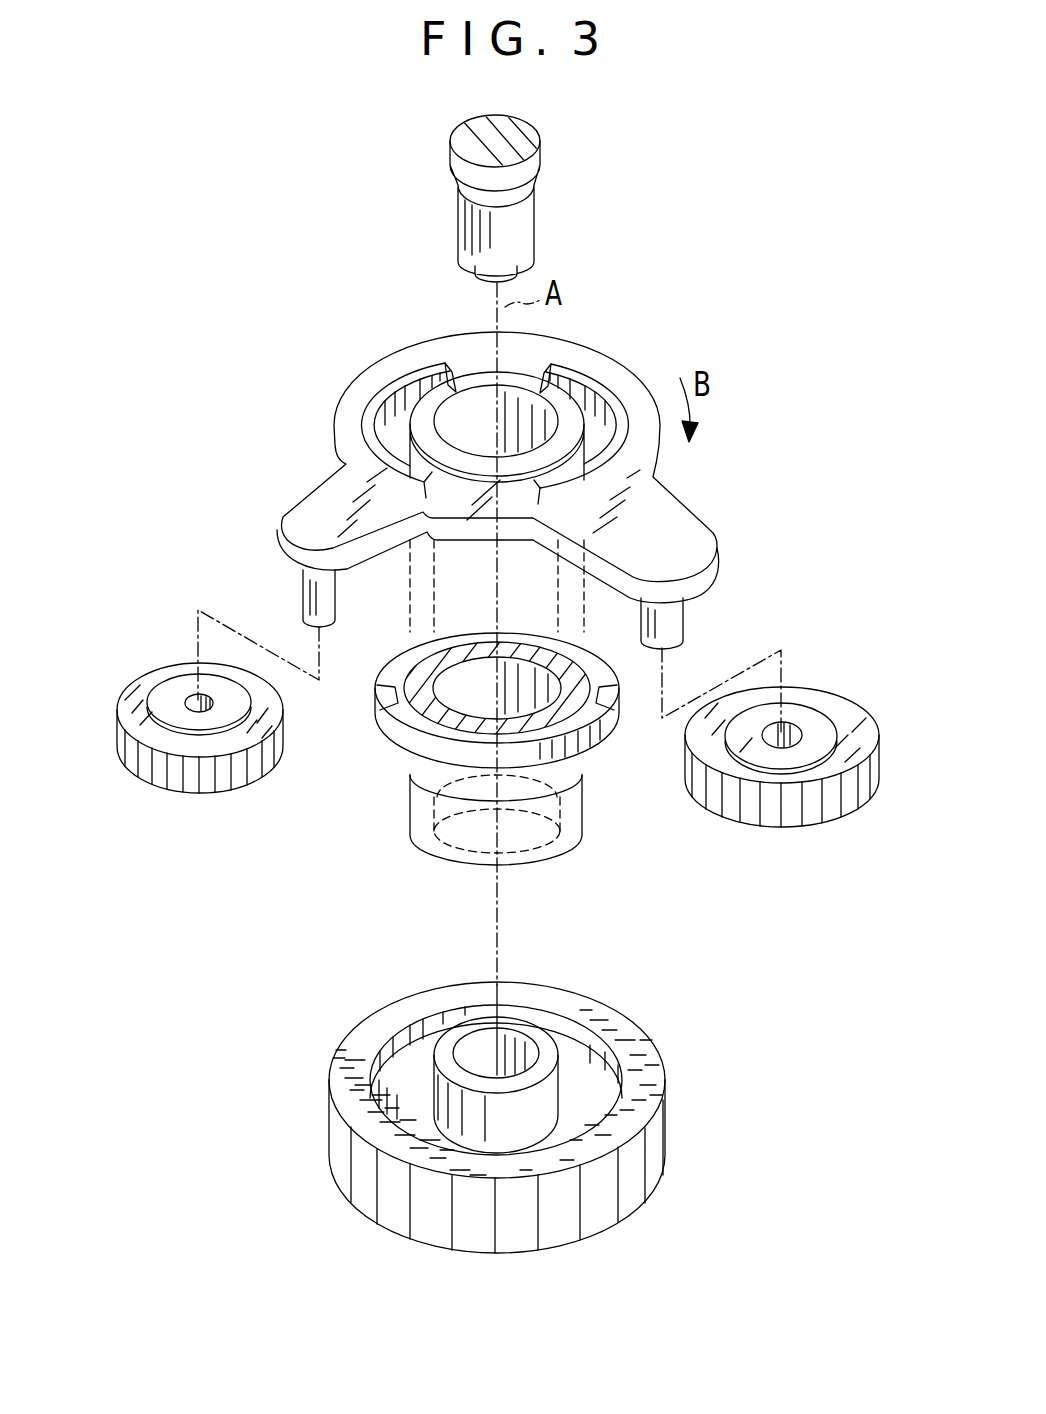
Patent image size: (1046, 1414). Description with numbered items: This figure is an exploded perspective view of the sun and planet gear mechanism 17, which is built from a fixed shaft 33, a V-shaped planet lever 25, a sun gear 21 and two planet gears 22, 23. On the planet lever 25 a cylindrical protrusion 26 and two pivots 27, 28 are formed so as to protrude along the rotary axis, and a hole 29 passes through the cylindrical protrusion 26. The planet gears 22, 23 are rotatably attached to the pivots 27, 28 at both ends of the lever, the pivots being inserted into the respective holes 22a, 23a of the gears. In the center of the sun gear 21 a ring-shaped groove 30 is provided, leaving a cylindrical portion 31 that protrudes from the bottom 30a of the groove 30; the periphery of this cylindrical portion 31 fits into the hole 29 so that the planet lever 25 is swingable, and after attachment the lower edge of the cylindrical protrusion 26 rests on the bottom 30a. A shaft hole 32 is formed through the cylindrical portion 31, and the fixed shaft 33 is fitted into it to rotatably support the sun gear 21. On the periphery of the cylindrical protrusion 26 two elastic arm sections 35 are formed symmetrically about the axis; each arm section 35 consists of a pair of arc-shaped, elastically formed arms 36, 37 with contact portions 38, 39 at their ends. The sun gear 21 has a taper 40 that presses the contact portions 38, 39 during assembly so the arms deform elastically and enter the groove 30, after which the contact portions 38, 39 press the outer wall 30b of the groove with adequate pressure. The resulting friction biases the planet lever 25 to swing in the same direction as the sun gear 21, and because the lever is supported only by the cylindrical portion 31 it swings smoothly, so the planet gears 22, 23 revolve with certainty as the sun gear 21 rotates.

The sun and planet gear mechanism 17 is at (268, 325).
The fixed shaft 33 is at (520, 232).
The planet lever 25 is at (652, 351).
The pivot 27 is at (683, 622).
The pivot 28 is at (305, 598).
The elastic arm section 35 is at (519, 703).
The arm 36 is at (405, 762).
The arm 37 is at (598, 772).
The contact portion 38 is at (378, 728).
The contact portion 39 is at (614, 750).
The cylindrical protrusion 26 is at (524, 852).
The hole 29 is at (453, 835).
The planet gear 23 is at (196, 751).
The hole 23a is at (187, 698).
The planet gear 22 is at (782, 781).
The hole 22a is at (796, 733).
The sun gear 21 is at (477, 1112).
The groove 30 is at (408, 1098).
The bottom 30a is at (417, 1123).
The outer wall 30b is at (598, 1110).
The taper 40 is at (397, 1032).
The cylindrical portion 31 is at (548, 1097).
The shaft hole 32 is at (512, 1038).